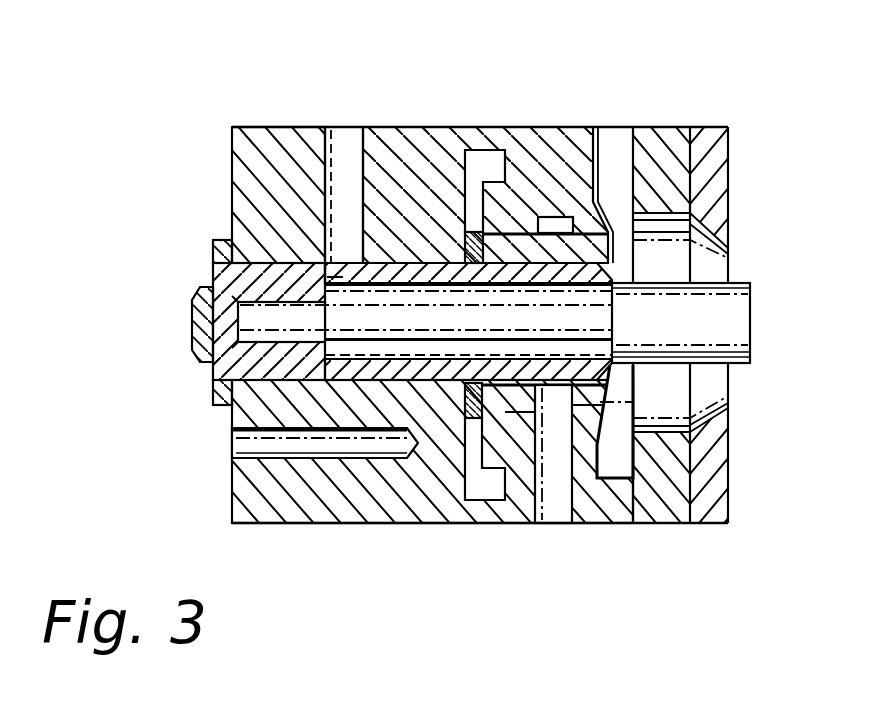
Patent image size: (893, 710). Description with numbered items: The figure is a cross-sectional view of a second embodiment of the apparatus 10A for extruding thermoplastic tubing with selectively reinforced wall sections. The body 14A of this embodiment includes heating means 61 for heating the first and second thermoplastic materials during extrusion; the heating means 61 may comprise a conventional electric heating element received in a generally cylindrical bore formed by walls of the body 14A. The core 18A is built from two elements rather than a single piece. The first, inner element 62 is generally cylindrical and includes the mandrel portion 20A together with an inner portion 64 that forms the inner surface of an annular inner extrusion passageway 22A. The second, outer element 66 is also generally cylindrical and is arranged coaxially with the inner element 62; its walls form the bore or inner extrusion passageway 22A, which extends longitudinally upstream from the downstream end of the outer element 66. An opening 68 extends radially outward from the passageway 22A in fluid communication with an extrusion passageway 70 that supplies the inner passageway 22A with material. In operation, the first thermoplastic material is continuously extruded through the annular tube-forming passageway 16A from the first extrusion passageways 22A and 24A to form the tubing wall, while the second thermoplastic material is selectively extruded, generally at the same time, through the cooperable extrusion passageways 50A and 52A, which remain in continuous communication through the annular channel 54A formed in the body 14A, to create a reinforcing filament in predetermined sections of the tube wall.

The apparatus 10A is at (430, 100).
The body 14A is at (250, 127).
The annular opening or passageway 16A is at (728, 222).
The core 18A is at (745, 284).
The mandrel portion 20A is at (752, 344).
The inner extrusion passageway 22A is at (353, 348).
The extrusion passageway 24A is at (608, 165).
The extrusion passageway 50A is at (553, 505).
The extrusion passageway 52A is at (613, 394).
The annular channel 54A is at (553, 218).
The heating means 61 is at (247, 445).
The inner element 62 is at (640, 336).
The inner portion 64 is at (426, 321).
The outer element 66 is at (248, 278).
The opening 68 is at (337, 277).
The extrusion passageway 70 is at (341, 143).